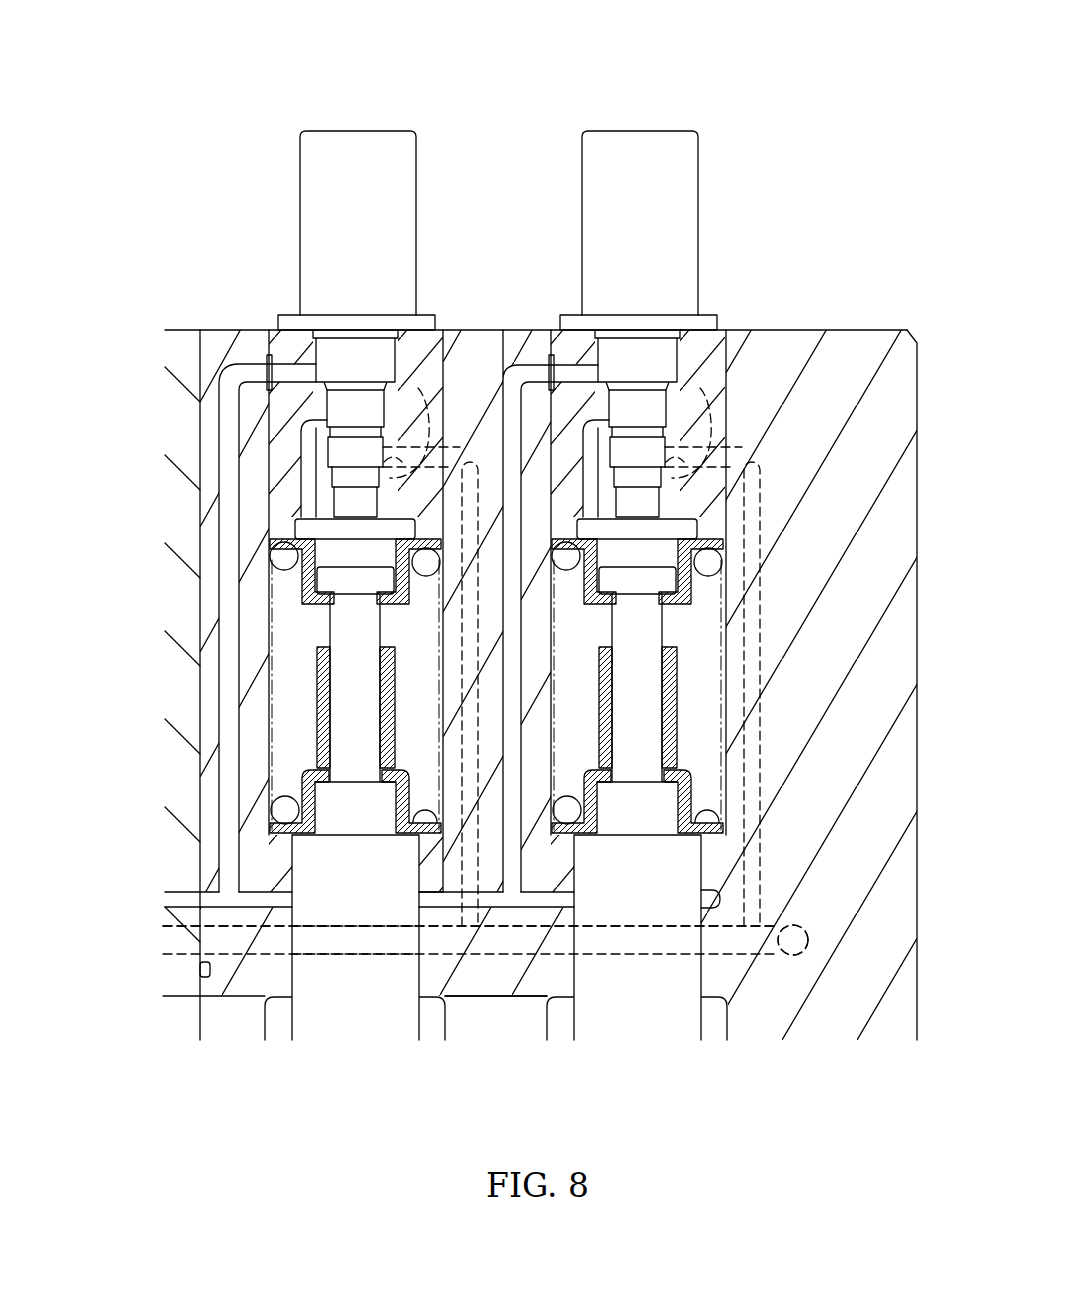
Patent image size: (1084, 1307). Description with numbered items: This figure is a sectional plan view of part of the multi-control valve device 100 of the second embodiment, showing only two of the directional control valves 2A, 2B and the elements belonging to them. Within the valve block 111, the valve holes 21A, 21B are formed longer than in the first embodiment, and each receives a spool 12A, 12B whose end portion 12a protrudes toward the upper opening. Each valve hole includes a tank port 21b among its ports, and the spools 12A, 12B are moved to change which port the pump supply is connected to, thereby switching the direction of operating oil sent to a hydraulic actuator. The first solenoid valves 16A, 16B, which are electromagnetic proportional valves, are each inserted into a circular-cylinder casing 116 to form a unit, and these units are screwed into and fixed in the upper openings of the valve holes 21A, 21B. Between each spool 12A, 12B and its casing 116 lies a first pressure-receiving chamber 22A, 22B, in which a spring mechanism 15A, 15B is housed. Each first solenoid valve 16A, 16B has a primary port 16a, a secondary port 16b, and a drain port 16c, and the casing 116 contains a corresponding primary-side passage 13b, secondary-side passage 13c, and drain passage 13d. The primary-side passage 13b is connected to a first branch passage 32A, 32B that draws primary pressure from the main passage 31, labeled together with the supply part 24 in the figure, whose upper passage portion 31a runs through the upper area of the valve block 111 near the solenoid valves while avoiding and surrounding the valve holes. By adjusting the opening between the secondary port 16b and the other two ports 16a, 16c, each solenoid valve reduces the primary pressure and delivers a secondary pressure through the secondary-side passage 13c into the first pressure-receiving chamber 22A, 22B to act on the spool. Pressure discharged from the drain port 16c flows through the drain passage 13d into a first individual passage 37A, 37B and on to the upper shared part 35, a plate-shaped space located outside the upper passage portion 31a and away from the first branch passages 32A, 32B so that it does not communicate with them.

The directional control valve 2A is at (655, 163).
The directional control valve 2B is at (373, 163).
The spool 12A is at (679, 1030).
The spool 12B is at (397, 1030).
The end portion 12a is at (340, 632).
The primary-side passage 13b is at (578, 417).
The secondary-side passage 13c is at (307, 463).
The drain passage 13d is at (518, 367).
The spring mechanism 15A is at (707, 813).
The spring mechanism 15B is at (290, 810).
The first solenoid valve 16A is at (638, 130).
The first solenoid valve 16B is at (352, 130).
The primary port 16a is at (521, 492).
The secondary port 16b is at (317, 427).
The drain port 16c is at (316, 377).
The valve hole 21A is at (720, 668).
The valve hole 21B is at (275, 658).
The tank port 21b is at (438, 1017).
The first pressure-receiving chamber 22A is at (658, 564).
The first pressure-receiving chamber 22B is at (376, 564).
The fuel supply passage 24 is at (793, 940).
The main passage 31 is at (787, 927).
The upper passage portion 31a is at (357, 952).
The first branch passage 32A is at (750, 852).
The first branch passage 32B is at (463, 853).
The upper shared part 35 is at (168, 905).
The first individual passage 37A is at (512, 862).
The first individual passage 37B is at (228, 865).
The multi-control valve device 100 is at (798, 178).
The valve block 111 is at (858, 358).
The casing 116 is at (413, 335).